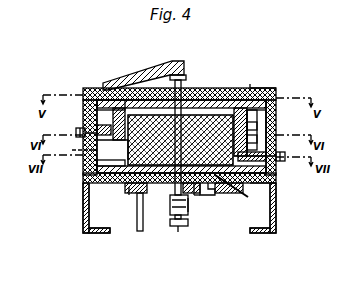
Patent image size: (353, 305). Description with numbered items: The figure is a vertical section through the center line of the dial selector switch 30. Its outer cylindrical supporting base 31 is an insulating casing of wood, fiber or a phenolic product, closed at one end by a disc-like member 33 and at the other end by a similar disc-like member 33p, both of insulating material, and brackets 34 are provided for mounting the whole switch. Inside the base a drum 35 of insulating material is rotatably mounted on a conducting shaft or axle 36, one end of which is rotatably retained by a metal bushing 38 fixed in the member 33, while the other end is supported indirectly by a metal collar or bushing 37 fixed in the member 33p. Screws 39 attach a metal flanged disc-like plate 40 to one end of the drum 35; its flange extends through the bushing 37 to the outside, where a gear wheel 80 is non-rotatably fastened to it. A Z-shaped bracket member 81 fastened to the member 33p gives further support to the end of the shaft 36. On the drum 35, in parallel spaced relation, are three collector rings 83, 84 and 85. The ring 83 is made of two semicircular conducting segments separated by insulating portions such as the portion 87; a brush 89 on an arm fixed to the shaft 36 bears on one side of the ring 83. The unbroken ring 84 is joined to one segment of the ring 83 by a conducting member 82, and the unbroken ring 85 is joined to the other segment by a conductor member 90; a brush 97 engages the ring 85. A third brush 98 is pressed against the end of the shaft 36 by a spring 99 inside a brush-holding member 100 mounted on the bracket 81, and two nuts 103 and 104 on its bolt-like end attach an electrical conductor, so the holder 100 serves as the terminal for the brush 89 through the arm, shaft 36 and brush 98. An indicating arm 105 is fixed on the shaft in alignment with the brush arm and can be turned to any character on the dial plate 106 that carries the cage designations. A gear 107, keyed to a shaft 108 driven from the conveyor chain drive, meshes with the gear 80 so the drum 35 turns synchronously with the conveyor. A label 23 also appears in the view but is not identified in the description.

The dial selector switch 30 is at (149, 152).
The outer cylindrical supporting base 31 is at (277, 122).
The disc-like member 33 is at (272, 88).
The disc-like member 33p is at (278, 183).
The brackets 34 is at (112, 229).
The drum 35 is at (222, 112).
The shaft or axle 36 is at (184, 80).
The metal collar or bushing 37 is at (215, 193).
The metal bushing 38 is at (200, 88).
The screws 39 is at (278, 177).
The metal flanged disc-like plate 40 is at (237, 191).
The section line 23 is at (78, 149).
The gear wheel 80 is at (206, 205).
The Z-shaped bracket member 81 is at (210, 195).
The conducting member 82 is at (88, 129).
The commutator ring 83 is at (181, 127).
The commutator ring 84 is at (256, 124).
The commutator ring 85 is at (118, 160).
The insulating portion 87 is at (112, 142).
The brush 89 is at (111, 105).
The conductor member 90 is at (241, 108).
The brush 97 is at (285, 160).
The third brush 98 is at (189, 207).
The spring 99 is at (170, 206).
The brush-holding member 100 is at (174, 218).
The nut 103 is at (190, 226).
The nut 104 is at (178, 233).
The indicating arm 105 is at (184, 62).
The disc-like plate 106 is at (110, 84).
The gear 107 is at (130, 196).
The shaft 108 is at (139, 232).